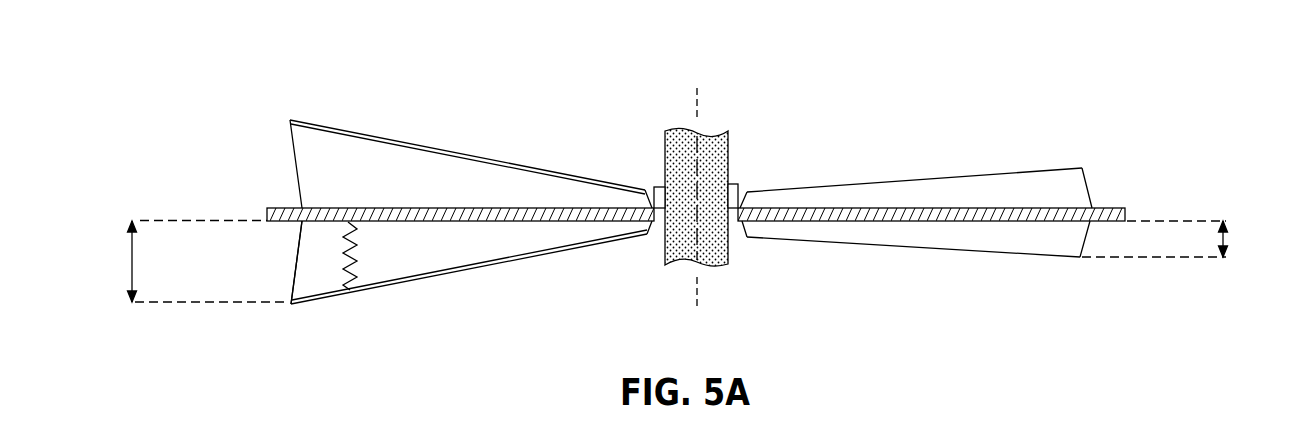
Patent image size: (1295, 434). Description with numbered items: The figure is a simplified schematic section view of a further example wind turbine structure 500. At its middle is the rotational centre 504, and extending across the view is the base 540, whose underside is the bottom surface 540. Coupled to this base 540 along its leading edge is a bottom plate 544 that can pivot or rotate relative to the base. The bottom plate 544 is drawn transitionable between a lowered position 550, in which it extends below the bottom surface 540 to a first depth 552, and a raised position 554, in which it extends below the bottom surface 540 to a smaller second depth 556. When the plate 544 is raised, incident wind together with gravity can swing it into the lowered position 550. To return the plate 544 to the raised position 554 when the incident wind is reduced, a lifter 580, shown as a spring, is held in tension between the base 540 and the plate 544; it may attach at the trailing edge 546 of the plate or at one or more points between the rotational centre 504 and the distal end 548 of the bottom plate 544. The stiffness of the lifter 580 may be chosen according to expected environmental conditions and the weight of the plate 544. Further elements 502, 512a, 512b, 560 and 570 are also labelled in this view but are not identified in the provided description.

The cutting assembly 500 is at (187, 72).
The plate 502 is at (1127, 212).
The rotational centre 504 is at (702, 183).
The first arm 512a is at (604, 180).
The second arm 512b is at (940, 178).
The base 540 is at (440, 225).
The bottom plate 544 is at (652, 222).
The trailing edge 546 is at (468, 271).
The distal end 548 is at (282, 295).
The lowered position 550 is at (299, 306).
The first depth 552 is at (201, 262).
The raised position 554 is at (1060, 268).
The second depth 556 is at (1224, 236).
The upper surface of second arm 560 is at (987, 163).
The upper blade strip 570 is at (485, 150).
The lifter 580 is at (348, 263).